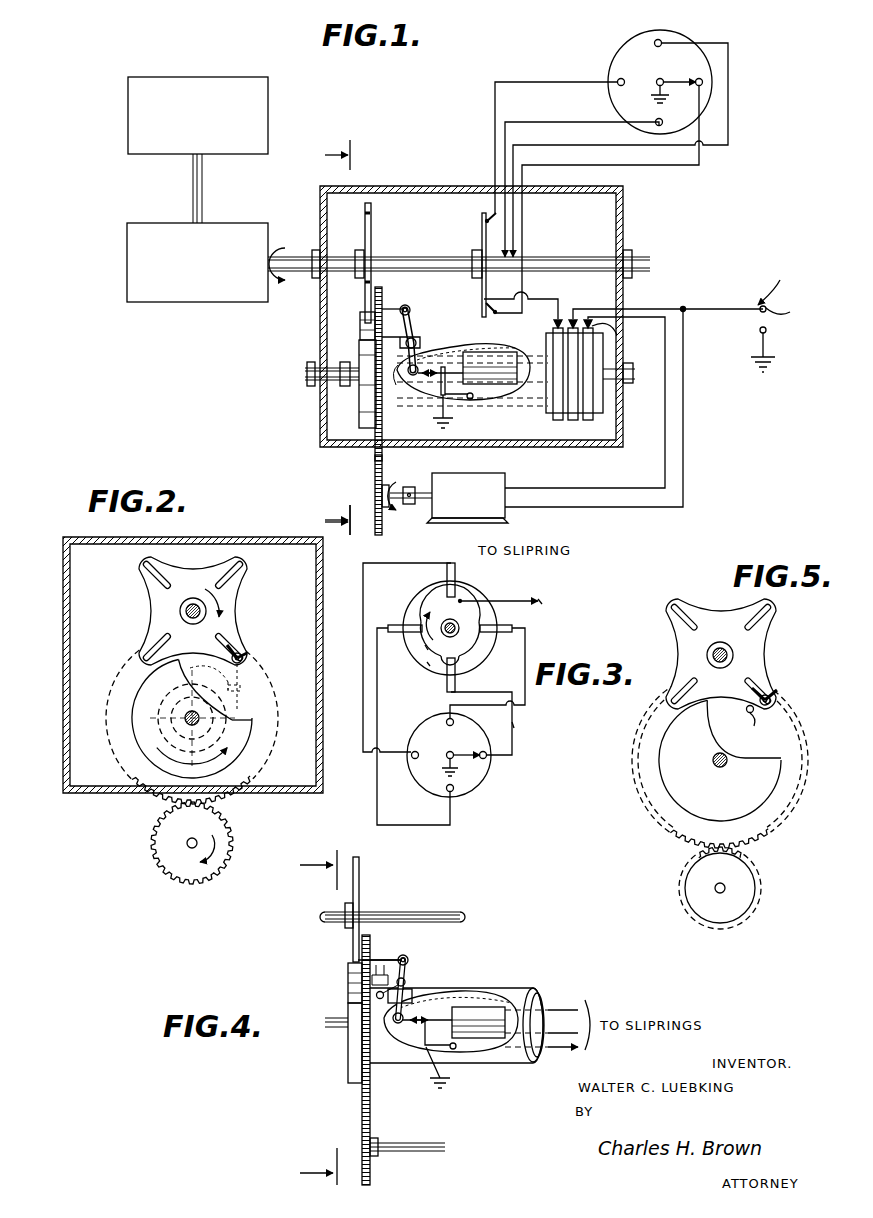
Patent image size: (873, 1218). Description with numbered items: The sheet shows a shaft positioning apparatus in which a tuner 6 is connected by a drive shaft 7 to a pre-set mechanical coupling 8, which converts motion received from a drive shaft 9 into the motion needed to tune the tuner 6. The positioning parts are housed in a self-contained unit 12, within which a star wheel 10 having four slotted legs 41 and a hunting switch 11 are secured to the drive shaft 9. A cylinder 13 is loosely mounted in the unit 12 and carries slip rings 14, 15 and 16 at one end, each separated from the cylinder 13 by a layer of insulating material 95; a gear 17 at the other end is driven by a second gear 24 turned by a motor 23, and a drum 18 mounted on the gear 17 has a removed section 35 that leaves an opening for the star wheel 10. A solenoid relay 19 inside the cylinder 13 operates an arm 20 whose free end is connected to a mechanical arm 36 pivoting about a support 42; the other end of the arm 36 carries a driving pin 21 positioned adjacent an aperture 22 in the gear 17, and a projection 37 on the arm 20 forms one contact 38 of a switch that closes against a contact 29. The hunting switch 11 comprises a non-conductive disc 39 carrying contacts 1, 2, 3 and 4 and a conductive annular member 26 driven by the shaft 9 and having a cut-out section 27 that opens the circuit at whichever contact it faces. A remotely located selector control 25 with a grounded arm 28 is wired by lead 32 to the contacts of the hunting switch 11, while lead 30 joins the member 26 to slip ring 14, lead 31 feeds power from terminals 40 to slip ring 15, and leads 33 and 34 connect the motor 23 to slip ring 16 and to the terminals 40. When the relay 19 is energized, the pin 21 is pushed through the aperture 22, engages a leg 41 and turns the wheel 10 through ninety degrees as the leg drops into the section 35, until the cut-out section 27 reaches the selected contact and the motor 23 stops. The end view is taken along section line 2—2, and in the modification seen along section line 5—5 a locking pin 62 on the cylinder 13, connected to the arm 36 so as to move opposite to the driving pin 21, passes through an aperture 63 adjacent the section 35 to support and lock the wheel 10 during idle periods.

In FIG. 3, the contact 1 is at (440, 575).
In FIG. 1, the contact 2 is at (328, 337).
In FIG. 2, the contact 2 is at (328, 520).
In FIG. 3, the contact 2 is at (495, 636).
In FIG. 3, the contact 3 is at (446, 680).
In FIG. 3, the contact 4 is at (398, 624).
In FIG. 4, the section line 5 is at (309, 1018).
In FIG. 1, the tuner 6 is at (148, 75).
In FIG. 1, the drive shaft 7 is at (192, 188).
In FIG. 1, the pre-set mechanical coupling 8 is at (127, 238).
In FIG. 1, the drive shaft 9 is at (418, 262).
In FIG. 2, the drive shaft 9 is at (180, 608).
In FIG. 3, the drive shaft 9 is at (455, 637).
In FIG. 4, the drive shaft 9 is at (420, 918).
In FIG. 5, the drive shaft 9 is at (708, 656).
In FIG. 1, the star wheel 10 is at (365, 224).
In FIG. 2, the star wheel 10 is at (142, 592).
In FIG. 4, the star wheel 10 is at (365, 884).
In FIG. 5, the star wheel 10 is at (772, 636).
In FIG. 1, the hunting switch 11 is at (482, 226).
In FIG. 3, the hunting switch 11 is at (490, 583).
In FIG. 1, the self-contained unit 12 is at (623, 220).
In FIG. 2, the self-contained unit 12 is at (255, 537).
In FIG. 1, the cylinder 13 is at (548, 418).
In FIG. 2, the cylinder 13 is at (158, 705).
In FIG. 4, the cylinder 13 is at (495, 1062).
In FIG. 1, the slip ring 14 is at (560, 420).
In FIG. 3, the slip ring 14 is at (540, 598).
In FIG. 1, the slip ring 15 is at (573, 420).
In FIG. 1, the slip ring 16 is at (590, 420).
In FIG. 1, the gear 17 is at (378, 287).
In FIG. 2, the gear 17 is at (122, 772).
In FIG. 4, the gear 17 is at (372, 1100).
In FIG. 5, the gear 17 is at (685, 840).
In FIG. 1, the drum 18 is at (359, 410).
In FIG. 2, the drum 18 is at (137, 738).
In FIG. 4, the drum 18 is at (348, 1060).
In FIG. 5, the drum 18 is at (680, 790).
In FIG. 1, the solenoid relay 19 is at (500, 352).
In FIG. 2, the solenoid relay 19 is at (184, 718).
In FIG. 4, the solenoid relay 19 is at (485, 1007).
In FIG. 1, the arm 20 is at (445, 358).
In FIG. 4, the arm 20 is at (442, 1010).
In FIG. 1, the driving pin 21 is at (396, 309).
In FIG. 2, the driving pin 21 is at (246, 654).
In FIG. 4, the driving pin 21 is at (390, 962).
In FIG. 5, the driving pin 21 is at (770, 698).
In FIG. 5, the aperture 22 is at (771, 701).
In FIG. 1, the motor 23 is at (470, 473).
In FIG. 1, the second gear 24 is at (390, 478).
In FIG. 2, the second gear 24 is at (150, 855).
In FIG. 4, the second gear 24 is at (375, 1130).
In FIG. 5, the second gear 24 is at (680, 876).
In FIG. 1, the selector control 25 is at (680, 40).
In FIG. 3, the selector control 25 is at (418, 782).
In FIG. 3, the annular member 26 is at (425, 648).
In FIG. 3, the cut-out section 27 is at (462, 668).
In FIG. 1, the arm 28 is at (670, 80).
In FIG. 3, the arm 28 is at (460, 762).
In FIG. 1, the contact 29 is at (480, 400).
In FIG. 1, the lead 30 is at (545, 300).
In FIG. 3, the lead 30 is at (545, 600).
In FIG. 1, the lead 31 is at (663, 308).
In FIG. 1, the lead 32 is at (670, 170).
In FIG. 3, the lead 32 is at (515, 730).
In FIG. 1, the lead 33 is at (665, 460).
In FIG. 1, the lead 34 is at (683, 420).
In FIG. 1, the removed section 35 is at (360, 340).
In FIG. 2, the removed section 35 is at (186, 686).
In FIG. 4, the removed section 35 is at (348, 998).
In FIG. 5, the removed section 35 is at (745, 750).
In FIG. 1, the mechanical arm 36 is at (410, 307).
In FIG. 2, the mechanical arm 36 is at (244, 658).
In FIG. 4, the mechanical arm 36 is at (408, 962).
In FIG. 1, the projection 37 is at (418, 392).
In FIG. 2, the projection 37 is at (247, 727).
In FIG. 1, the contact 38 is at (466, 396).
In FIG. 3, the disc 39 is at (427, 665).
In FIG. 1, the terminals 40 is at (780, 325).
In FIG. 1, the slotted legs 41 is at (371, 212).
In FIG. 2, the slotted legs 41 is at (142, 575).
In FIG. 5, the slotted legs 41 is at (765, 685).
In FIG. 1, the support 42 is at (415, 340).
In FIG. 2, the support 42 is at (210, 668).
In FIG. 4, the locking pin 62 is at (372, 980).
In FIG. 5, the locking pin 62 is at (746, 712).
In FIG. 5, the aperture 63 is at (751, 727).
In FIG. 1, the layer of insulating material 95 is at (618, 336).